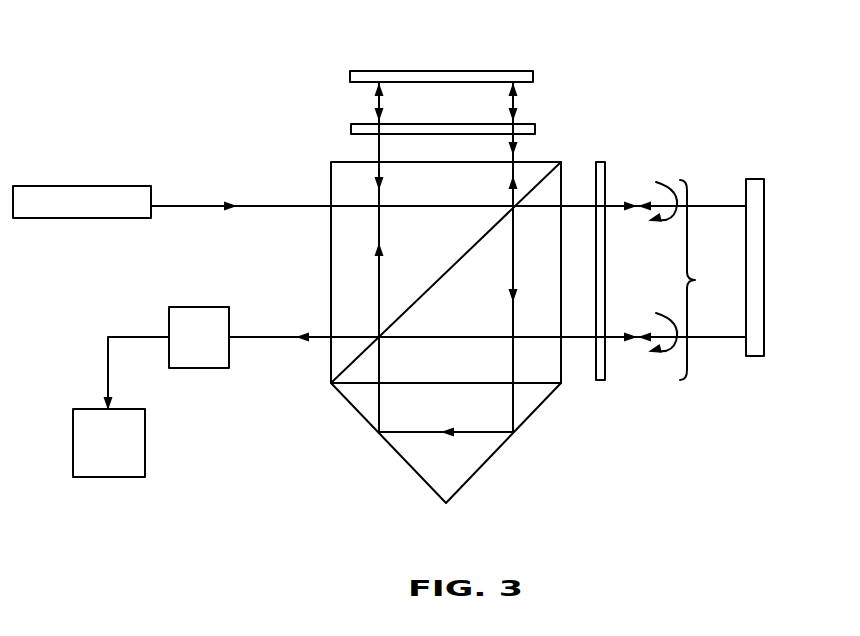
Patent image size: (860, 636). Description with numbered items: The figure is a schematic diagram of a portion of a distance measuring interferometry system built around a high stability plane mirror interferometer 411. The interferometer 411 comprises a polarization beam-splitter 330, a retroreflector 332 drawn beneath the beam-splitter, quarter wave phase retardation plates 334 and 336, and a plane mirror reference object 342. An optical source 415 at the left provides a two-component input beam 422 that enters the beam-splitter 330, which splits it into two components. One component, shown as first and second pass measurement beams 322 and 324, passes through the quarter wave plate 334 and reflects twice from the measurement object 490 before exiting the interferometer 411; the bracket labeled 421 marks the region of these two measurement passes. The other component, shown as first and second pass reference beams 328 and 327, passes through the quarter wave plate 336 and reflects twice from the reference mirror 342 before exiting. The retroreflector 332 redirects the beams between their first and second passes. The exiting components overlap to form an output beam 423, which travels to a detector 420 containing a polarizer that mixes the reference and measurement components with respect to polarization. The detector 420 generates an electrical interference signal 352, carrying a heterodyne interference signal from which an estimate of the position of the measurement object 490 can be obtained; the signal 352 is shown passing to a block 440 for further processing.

The high stability plane mirror interferometer 411 is at (444, 44).
The plane mirror reference object 342 is at (350, 77).
The quarter wave phase retardation plate 336 is at (351, 129).
The second pass reference beam 327 is at (380, 110).
The first pass reference beam 328 is at (522, 100).
The polarization beam-splitter 330 is at (553, 190).
The quarter wave phase retardation plate 334 is at (610, 175).
The measurement object 490 is at (748, 178).
The optical source 415 is at (60, 186).
The input beam 422 is at (200, 205).
The first pass measurement beam 322 is at (668, 226).
The second pass measurement beam 324 is at (665, 313).
The measurement beams region 421 is at (712, 280).
The detector 420 is at (205, 307).
The electrical interference signal 352 is at (105, 370).
The output beam 423 is at (277, 342).
The retroreflector 332 is at (482, 467).
The signal processor 440 is at (110, 478).